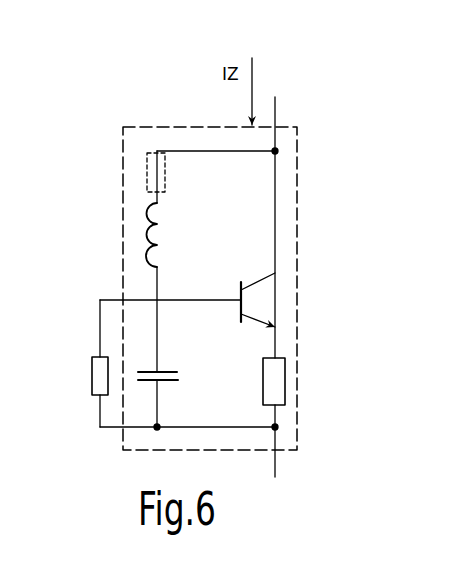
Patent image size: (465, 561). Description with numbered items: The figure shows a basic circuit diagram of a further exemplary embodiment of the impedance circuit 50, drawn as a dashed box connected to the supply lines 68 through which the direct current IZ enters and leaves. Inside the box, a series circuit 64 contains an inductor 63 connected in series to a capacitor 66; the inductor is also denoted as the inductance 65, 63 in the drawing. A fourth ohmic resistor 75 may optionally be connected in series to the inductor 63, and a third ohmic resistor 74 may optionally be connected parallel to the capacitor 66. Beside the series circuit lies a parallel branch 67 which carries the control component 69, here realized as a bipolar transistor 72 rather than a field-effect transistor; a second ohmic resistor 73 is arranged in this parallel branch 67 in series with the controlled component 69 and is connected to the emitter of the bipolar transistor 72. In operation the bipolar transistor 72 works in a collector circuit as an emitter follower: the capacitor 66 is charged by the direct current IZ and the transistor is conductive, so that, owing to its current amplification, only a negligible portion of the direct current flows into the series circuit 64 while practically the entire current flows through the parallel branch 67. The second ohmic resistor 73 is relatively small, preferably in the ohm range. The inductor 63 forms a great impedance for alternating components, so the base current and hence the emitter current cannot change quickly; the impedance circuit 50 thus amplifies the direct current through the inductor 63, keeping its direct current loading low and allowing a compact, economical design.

The impedance circuit 50 is at (226, 246).
The series circuit 64 is at (152, 136).
The supply line 68 is at (279, 114).
The fourth ohmic resistor 75 is at (167, 170).
The inductance 65 is at (95, 215).
The inductor 63 is at (148, 237).
The capacitor 66 is at (160, 383).
The parallel branch 67 is at (276, 222).
The control component 69 is at (330, 300).
The bipolar transistor 72 is at (280, 301).
The second ohmic resistor 73 is at (286, 378).
The third ohmic resistor 74 is at (92, 372).